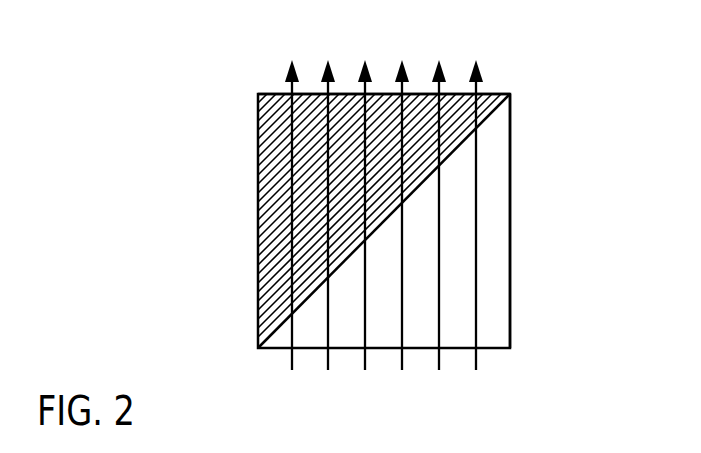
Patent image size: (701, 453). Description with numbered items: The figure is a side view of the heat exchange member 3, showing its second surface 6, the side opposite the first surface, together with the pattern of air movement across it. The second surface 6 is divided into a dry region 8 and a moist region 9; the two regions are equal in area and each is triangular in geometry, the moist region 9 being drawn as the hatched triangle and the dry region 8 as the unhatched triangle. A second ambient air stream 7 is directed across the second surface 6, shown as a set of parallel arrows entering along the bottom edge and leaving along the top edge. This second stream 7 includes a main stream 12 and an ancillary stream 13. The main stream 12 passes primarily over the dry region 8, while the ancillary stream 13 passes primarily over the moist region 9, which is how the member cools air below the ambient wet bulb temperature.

The heat exchange member 3 is at (259, 348).
The second surface 6 is at (497, 93).
The second ambient air stream 7 is at (495, 367).
The dry region 8 is at (498, 213).
The moist region 9 is at (270, 250).
The main stream 12 is at (487, 60).
The ancillary stream 13 is at (376, 60).